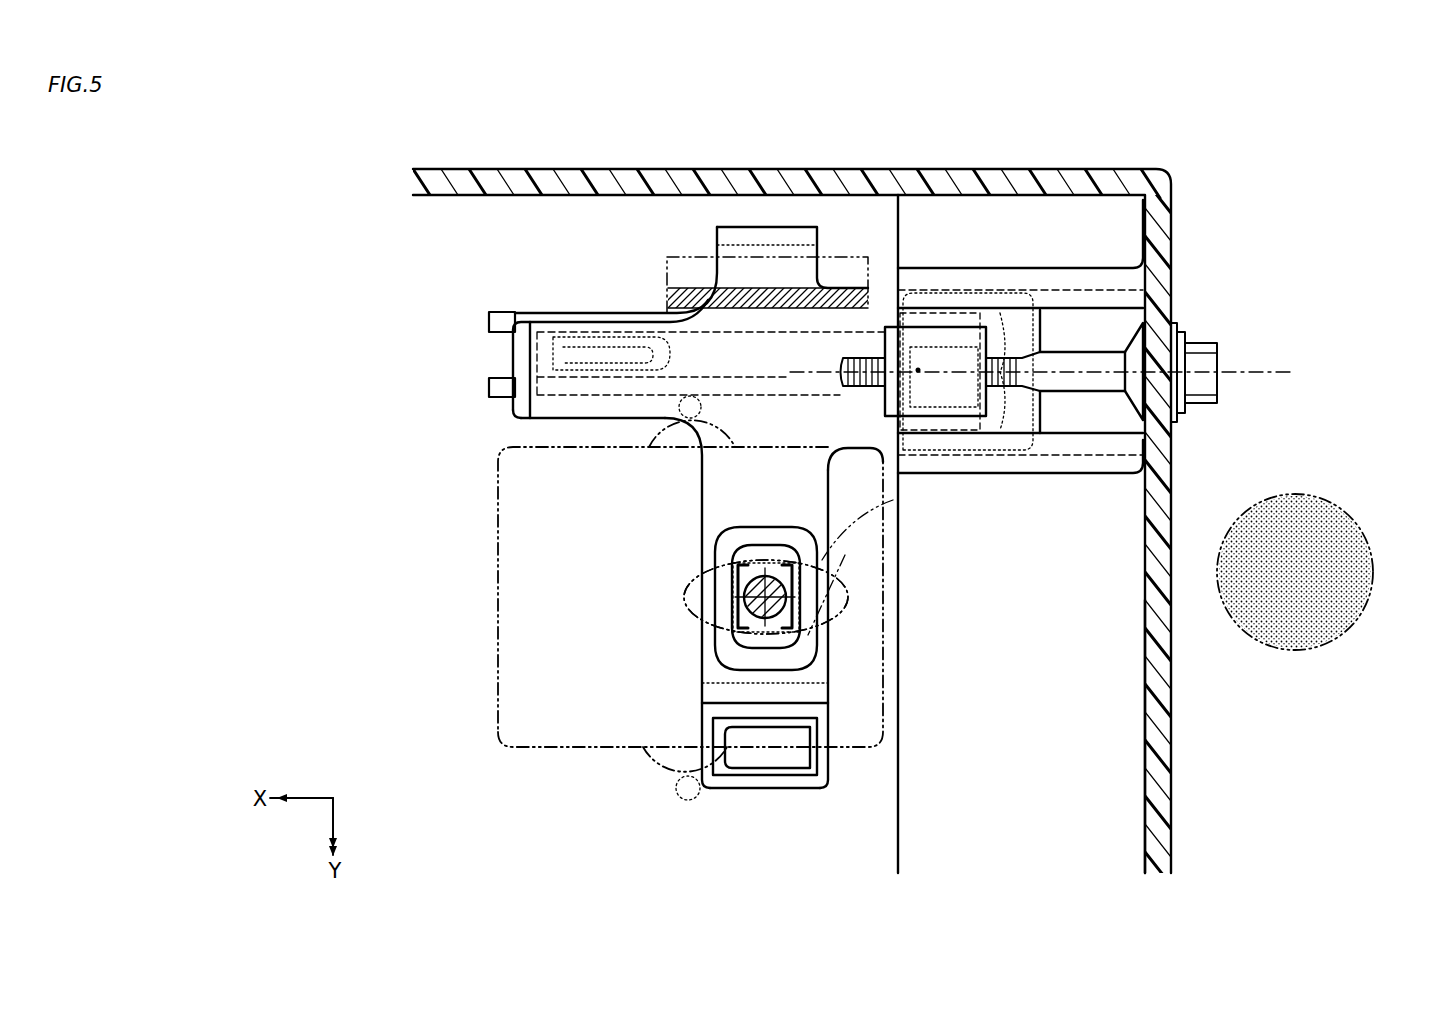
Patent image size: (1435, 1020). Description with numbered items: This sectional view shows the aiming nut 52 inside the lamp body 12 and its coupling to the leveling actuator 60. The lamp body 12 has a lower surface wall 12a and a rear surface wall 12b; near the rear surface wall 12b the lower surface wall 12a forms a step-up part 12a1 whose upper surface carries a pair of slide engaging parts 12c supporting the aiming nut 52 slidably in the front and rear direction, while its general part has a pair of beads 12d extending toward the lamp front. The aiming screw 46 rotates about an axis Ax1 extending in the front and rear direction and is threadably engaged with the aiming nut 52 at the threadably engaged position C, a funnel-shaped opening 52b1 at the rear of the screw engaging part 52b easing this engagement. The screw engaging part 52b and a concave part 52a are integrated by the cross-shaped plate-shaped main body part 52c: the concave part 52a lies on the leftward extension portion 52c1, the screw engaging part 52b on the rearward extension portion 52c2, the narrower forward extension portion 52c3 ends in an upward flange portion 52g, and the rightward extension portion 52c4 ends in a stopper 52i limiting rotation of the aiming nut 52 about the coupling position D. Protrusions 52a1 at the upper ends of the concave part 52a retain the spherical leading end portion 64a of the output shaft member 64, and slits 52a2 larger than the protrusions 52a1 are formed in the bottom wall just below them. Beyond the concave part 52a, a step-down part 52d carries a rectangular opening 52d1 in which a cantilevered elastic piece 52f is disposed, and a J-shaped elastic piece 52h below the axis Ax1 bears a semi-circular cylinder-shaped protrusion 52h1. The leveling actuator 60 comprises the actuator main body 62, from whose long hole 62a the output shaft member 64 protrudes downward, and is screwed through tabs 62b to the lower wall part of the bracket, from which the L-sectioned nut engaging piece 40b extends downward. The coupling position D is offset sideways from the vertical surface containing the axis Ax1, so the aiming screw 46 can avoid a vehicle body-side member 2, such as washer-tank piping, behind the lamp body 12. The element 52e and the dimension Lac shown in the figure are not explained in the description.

The vehicle body-side member 2 is at (1340, 492).
The lamp body 12 is at (1180, 231).
The lower surface wall 12a is at (538, 245).
The step-up part 12a1 is at (1093, 770).
The rear surface wall 12b is at (1160, 712).
The slide engaging parts 12c is at (1053, 280).
The beads 12d is at (503, 315).
The nut engaging piece 40b is at (832, 253).
The aiming screw 46 is at (1072, 342).
The aiming nut 52 is at (505, 343).
The concave part 52a is at (725, 550).
The protrusions 52a1 is at (735, 612).
The slits 52a2 is at (757, 643).
The screw engaging part 52b is at (942, 337).
The funnel-shaped opening 52b1 is at (1057, 423).
The plate-shaped main body part 52c is at (723, 460).
The leftward extension portion 52c1 is at (823, 637).
The rearward extension portion 52c2 is at (955, 425).
The forward extension portion 52c3 is at (583, 405).
The rightward extension portion 52c4 is at (745, 297).
The step-down part 52d is at (823, 755).
The rectangular opening 52d1 is at (745, 738).
The nut sleeve 52e is at (982, 283).
The elastic piece 52f is at (765, 760).
The flange portion 52g is at (518, 367).
The elastic piece 52h is at (630, 337).
The semi-circular cylinder-shaped protrusion 52h1 is at (582, 330).
The stopper 52i is at (757, 233).
The leveling actuator 60 is at (490, 636).
The actuator main body 62 is at (560, 755).
The long hole 62a is at (893, 500).
The tabs 62b is at (710, 373).
The output shaft member 64 is at (758, 580).
The leading end portion 64a is at (777, 577).
The axis Ax1 is at (1283, 372).
The threadably engaged position C is at (918, 370).
The adjustment range Lac is at (733, 585).
The coupling position D is at (766, 597).